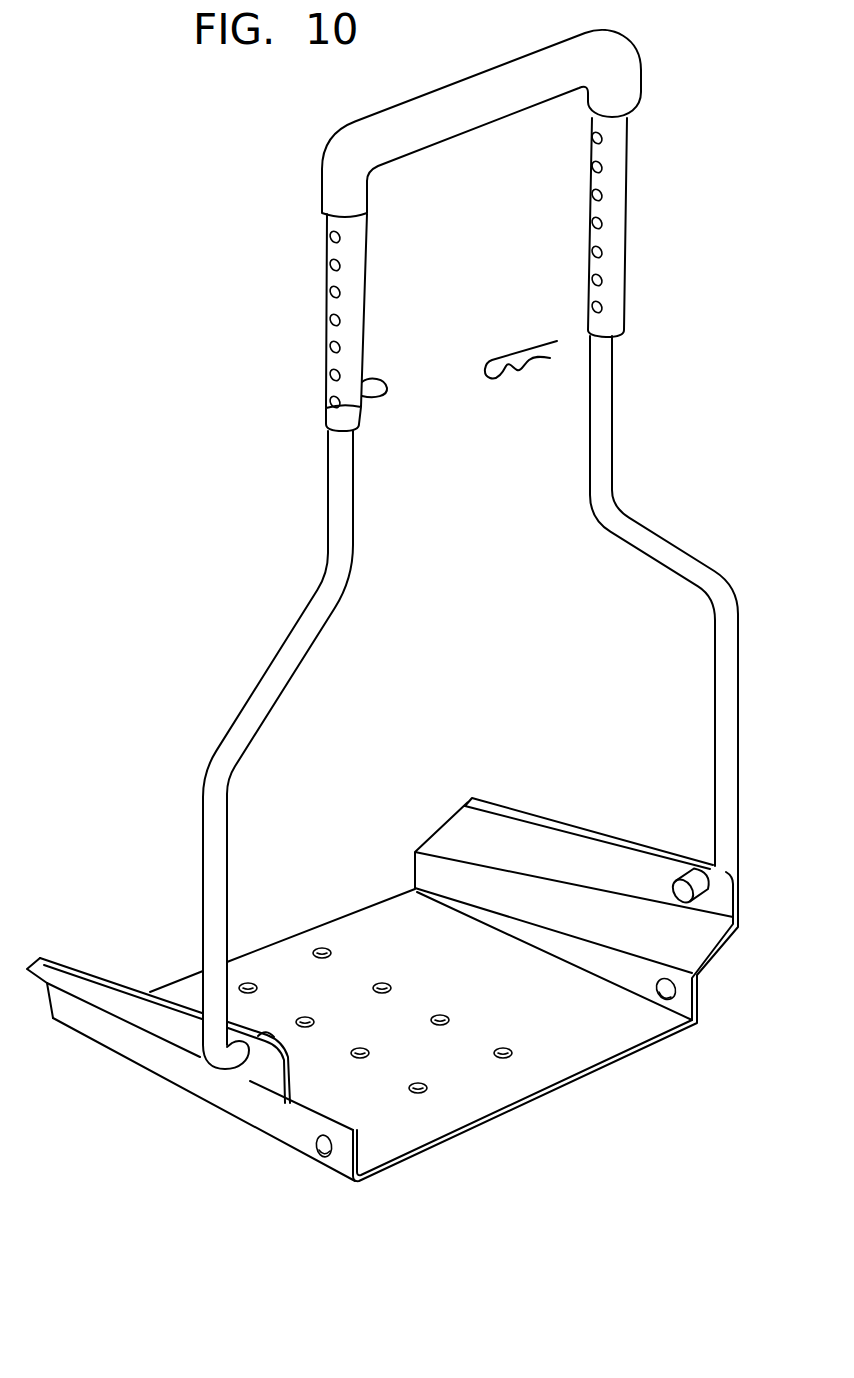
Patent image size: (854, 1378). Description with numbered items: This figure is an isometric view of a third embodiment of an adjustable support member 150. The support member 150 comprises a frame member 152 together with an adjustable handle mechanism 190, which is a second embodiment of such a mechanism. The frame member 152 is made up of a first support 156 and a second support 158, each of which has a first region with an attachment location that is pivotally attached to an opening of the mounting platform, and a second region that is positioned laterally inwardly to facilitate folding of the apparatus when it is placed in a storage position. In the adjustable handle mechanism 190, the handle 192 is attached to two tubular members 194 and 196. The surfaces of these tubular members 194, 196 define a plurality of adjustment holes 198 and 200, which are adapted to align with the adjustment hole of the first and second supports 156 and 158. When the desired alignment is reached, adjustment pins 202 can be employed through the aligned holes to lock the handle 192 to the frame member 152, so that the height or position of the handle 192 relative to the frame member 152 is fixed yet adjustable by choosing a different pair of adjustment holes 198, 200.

The support member 150 is at (195, 607).
The frame member 152 is at (607, 385).
The first support 156 is at (340, 500).
The second support 158 is at (600, 412).
The adjustable handle mechanism 190 is at (278, 222).
The handle 192 is at (399, 119).
The tubular member 194 is at (342, 281).
The tubular member 196 is at (594, 184).
The adjustment holes 198 is at (331, 378).
The adjustment holes 200 is at (590, 281).
The adjustment pins 202 is at (387, 392).